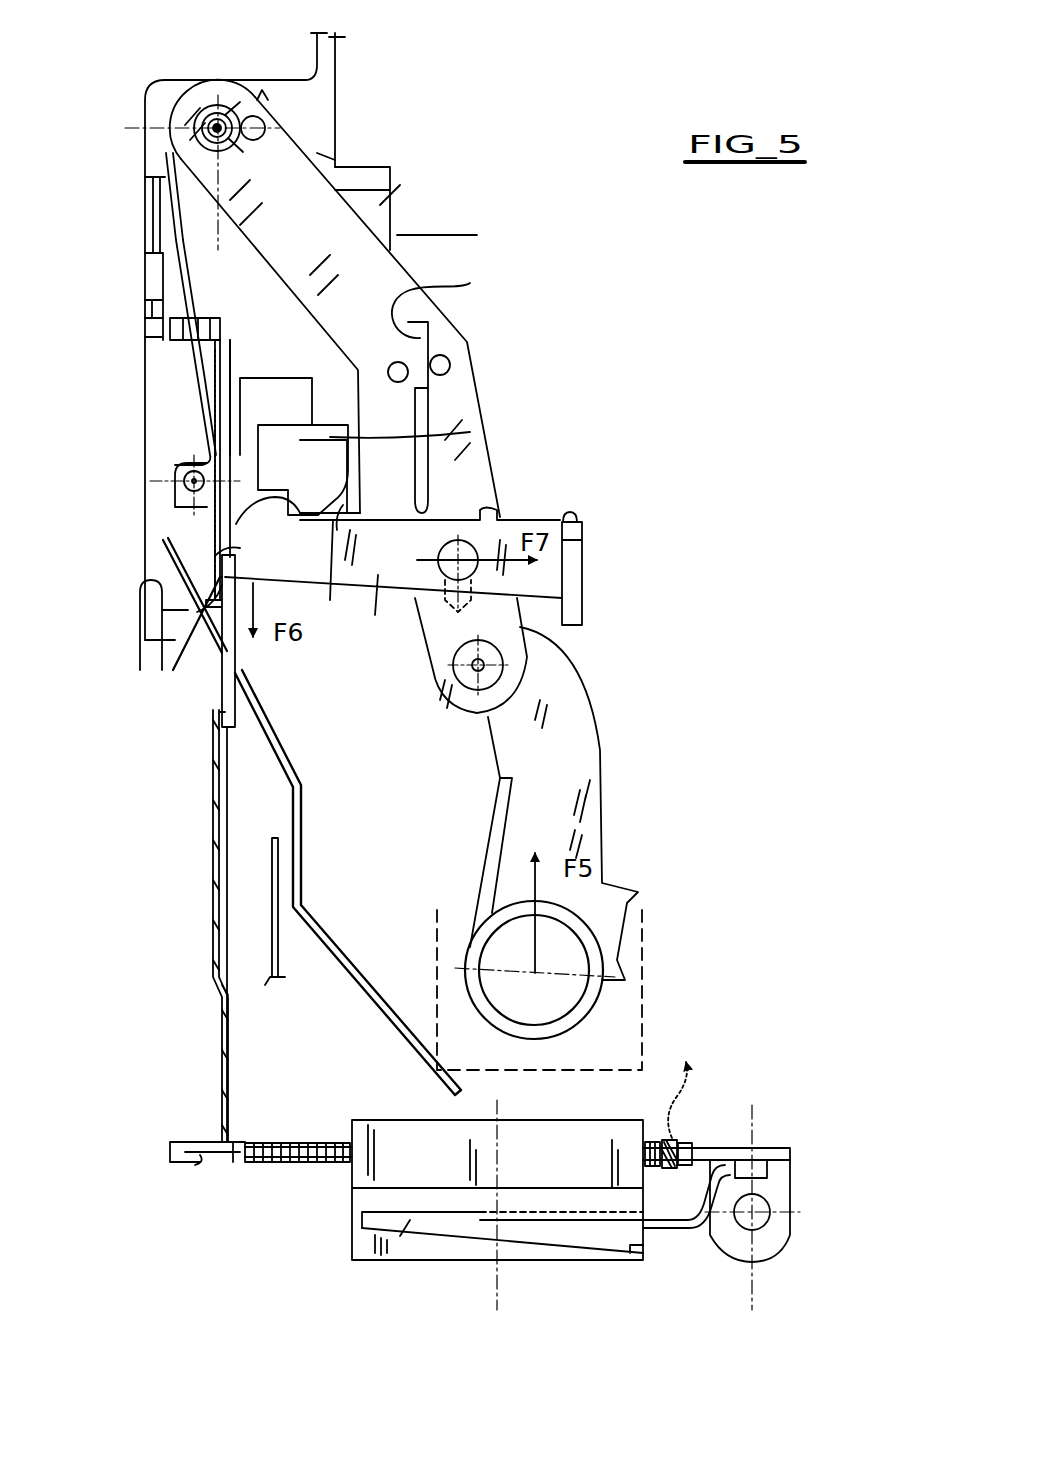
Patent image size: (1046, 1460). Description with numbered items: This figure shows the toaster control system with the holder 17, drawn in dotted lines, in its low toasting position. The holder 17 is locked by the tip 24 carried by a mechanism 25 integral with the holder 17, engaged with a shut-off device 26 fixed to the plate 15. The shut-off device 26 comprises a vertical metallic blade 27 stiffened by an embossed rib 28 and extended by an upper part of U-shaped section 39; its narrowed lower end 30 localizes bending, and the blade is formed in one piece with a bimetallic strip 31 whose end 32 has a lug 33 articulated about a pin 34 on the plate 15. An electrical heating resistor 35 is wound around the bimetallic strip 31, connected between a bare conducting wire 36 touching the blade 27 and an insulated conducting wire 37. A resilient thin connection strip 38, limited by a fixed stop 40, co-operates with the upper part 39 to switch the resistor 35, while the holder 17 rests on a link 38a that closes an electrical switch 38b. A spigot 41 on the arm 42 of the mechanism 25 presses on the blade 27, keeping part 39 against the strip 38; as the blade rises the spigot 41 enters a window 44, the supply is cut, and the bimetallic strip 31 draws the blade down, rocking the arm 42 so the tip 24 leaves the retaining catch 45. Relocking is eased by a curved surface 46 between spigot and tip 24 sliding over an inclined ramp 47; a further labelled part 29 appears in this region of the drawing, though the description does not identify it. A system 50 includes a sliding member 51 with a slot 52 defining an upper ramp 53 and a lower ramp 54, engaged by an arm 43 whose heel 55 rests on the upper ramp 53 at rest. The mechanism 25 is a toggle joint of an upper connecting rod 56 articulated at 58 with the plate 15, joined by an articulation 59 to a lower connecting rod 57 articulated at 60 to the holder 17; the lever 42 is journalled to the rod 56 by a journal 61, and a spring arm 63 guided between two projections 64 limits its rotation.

The plate 15 is at (247, 302).
The holder 17 is at (648, 1000).
The tip 24 is at (228, 522).
The mechanism 25 is at (505, 372).
The shut-off device 26 is at (470, 432).
The metallic blade 27 is at (218, 1014).
The embossed rib 28 is at (210, 872).
The lever portion 29 is at (230, 528).
The lower end 30 is at (215, 1110).
The bimetallic strip 31 is at (233, 1153).
The end 32 is at (774, 1150).
The lug 33 is at (778, 1193).
The pin 34 is at (747, 1223).
The electrical heating resistor 35 is at (297, 1143).
The bare conducting wire 36 is at (240, 1138).
The insulated conducting wire 37 is at (680, 1092).
The resilient thin connection strip 38 is at (197, 362).
The link 38a is at (300, 805).
The electrical switch 38b is at (285, 868).
The upper part of U-shaped section 39 is at (245, 450).
The fixed stop 40 is at (183, 483).
The spigot 41 is at (232, 566).
The arm 42 is at (378, 597).
The arm 43 is at (662, 1222).
The window 44 is at (220, 650).
The retaining catch 45 is at (287, 490).
The curved surface 46 is at (197, 612).
The inclined ramp 47 is at (337, 575).
The system 50 is at (436, 1245).
The member 51 is at (533, 1130).
The slot 52 is at (473, 1228).
The upper ramp 53 is at (390, 1253).
The lower ramp 54 is at (563, 1233).
The heel 55 is at (507, 1212).
The upper connecting rod 56 is at (347, 232).
The lower connecting rod 57 is at (570, 772).
The articulation 58 is at (212, 113).
The articulation 59 is at (468, 672).
The articulation 60 is at (552, 958).
The journal 61 is at (470, 545).
The spring arm 63 is at (470, 283).
The projections 64 is at (400, 362).